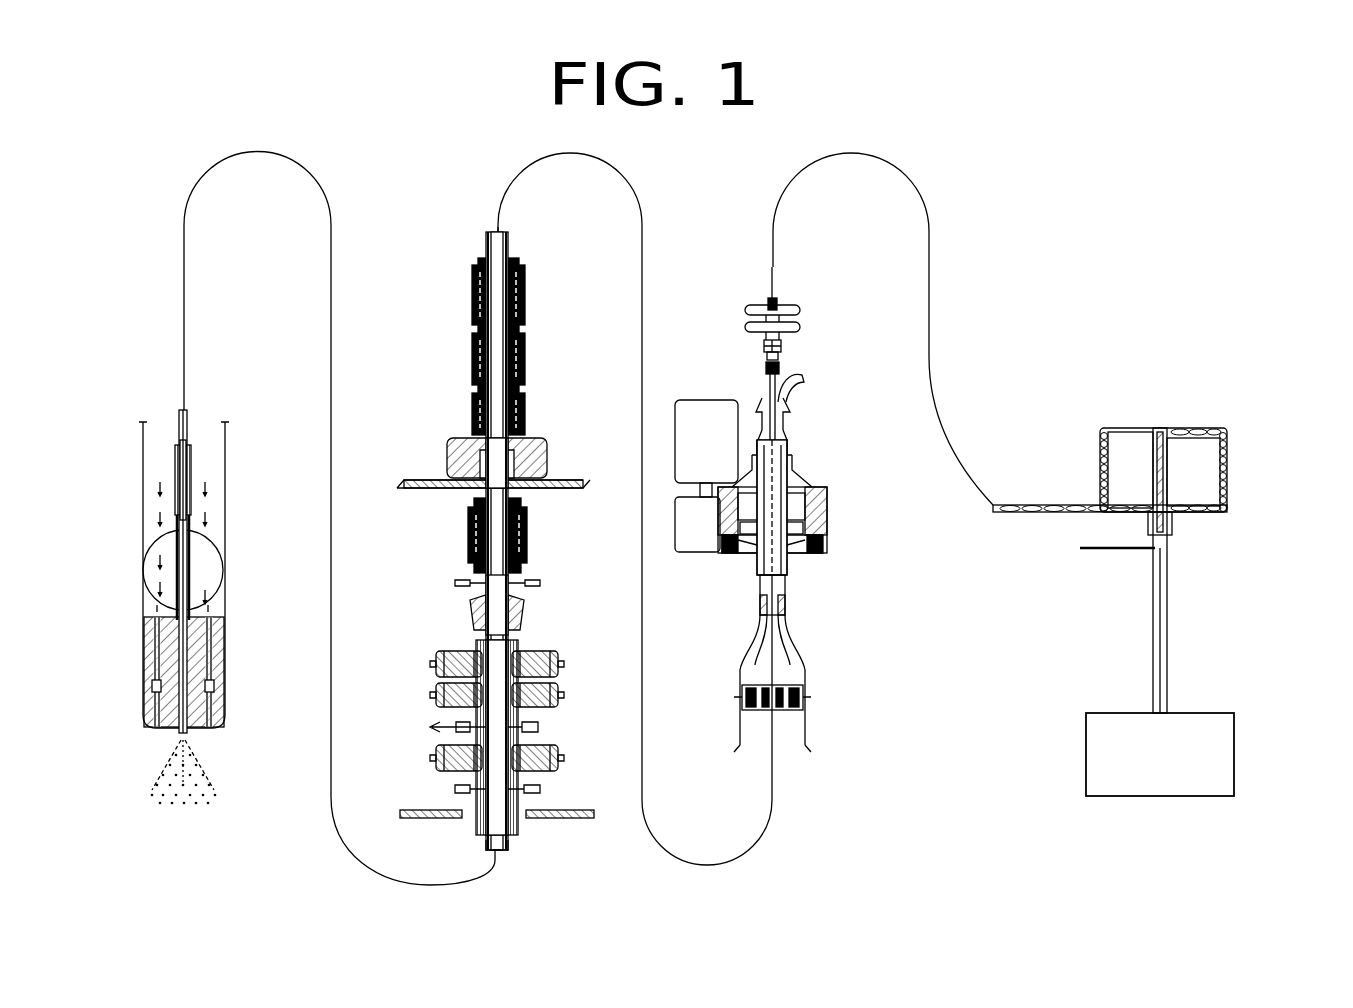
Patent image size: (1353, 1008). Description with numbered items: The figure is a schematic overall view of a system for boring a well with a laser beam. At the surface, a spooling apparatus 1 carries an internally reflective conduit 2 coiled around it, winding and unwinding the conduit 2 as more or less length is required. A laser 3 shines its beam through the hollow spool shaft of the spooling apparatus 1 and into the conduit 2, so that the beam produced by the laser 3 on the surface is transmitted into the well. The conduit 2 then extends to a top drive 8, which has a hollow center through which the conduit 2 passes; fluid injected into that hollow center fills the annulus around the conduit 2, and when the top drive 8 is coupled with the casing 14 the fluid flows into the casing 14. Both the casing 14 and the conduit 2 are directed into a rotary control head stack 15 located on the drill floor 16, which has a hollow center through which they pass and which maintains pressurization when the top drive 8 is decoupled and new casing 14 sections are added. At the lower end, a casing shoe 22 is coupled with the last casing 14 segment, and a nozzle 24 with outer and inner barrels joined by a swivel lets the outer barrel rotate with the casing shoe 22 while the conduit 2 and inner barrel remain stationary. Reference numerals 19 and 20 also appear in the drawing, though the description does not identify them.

The spooling apparatus 1 is at (1225, 415).
The internally reflective conduit 2 is at (1055, 505).
The laser 3 is at (1237, 753).
The top drive 8 is at (835, 545).
The casing 14 is at (808, 723).
The rotary control head stack 15 is at (532, 312).
The drill floor 16 is at (565, 472).
The guide roller assembly 19 is at (538, 618).
The lower heater unit 20 is at (560, 818).
The casing shoe 22 is at (228, 700).
The nozzle 24 is at (190, 735).